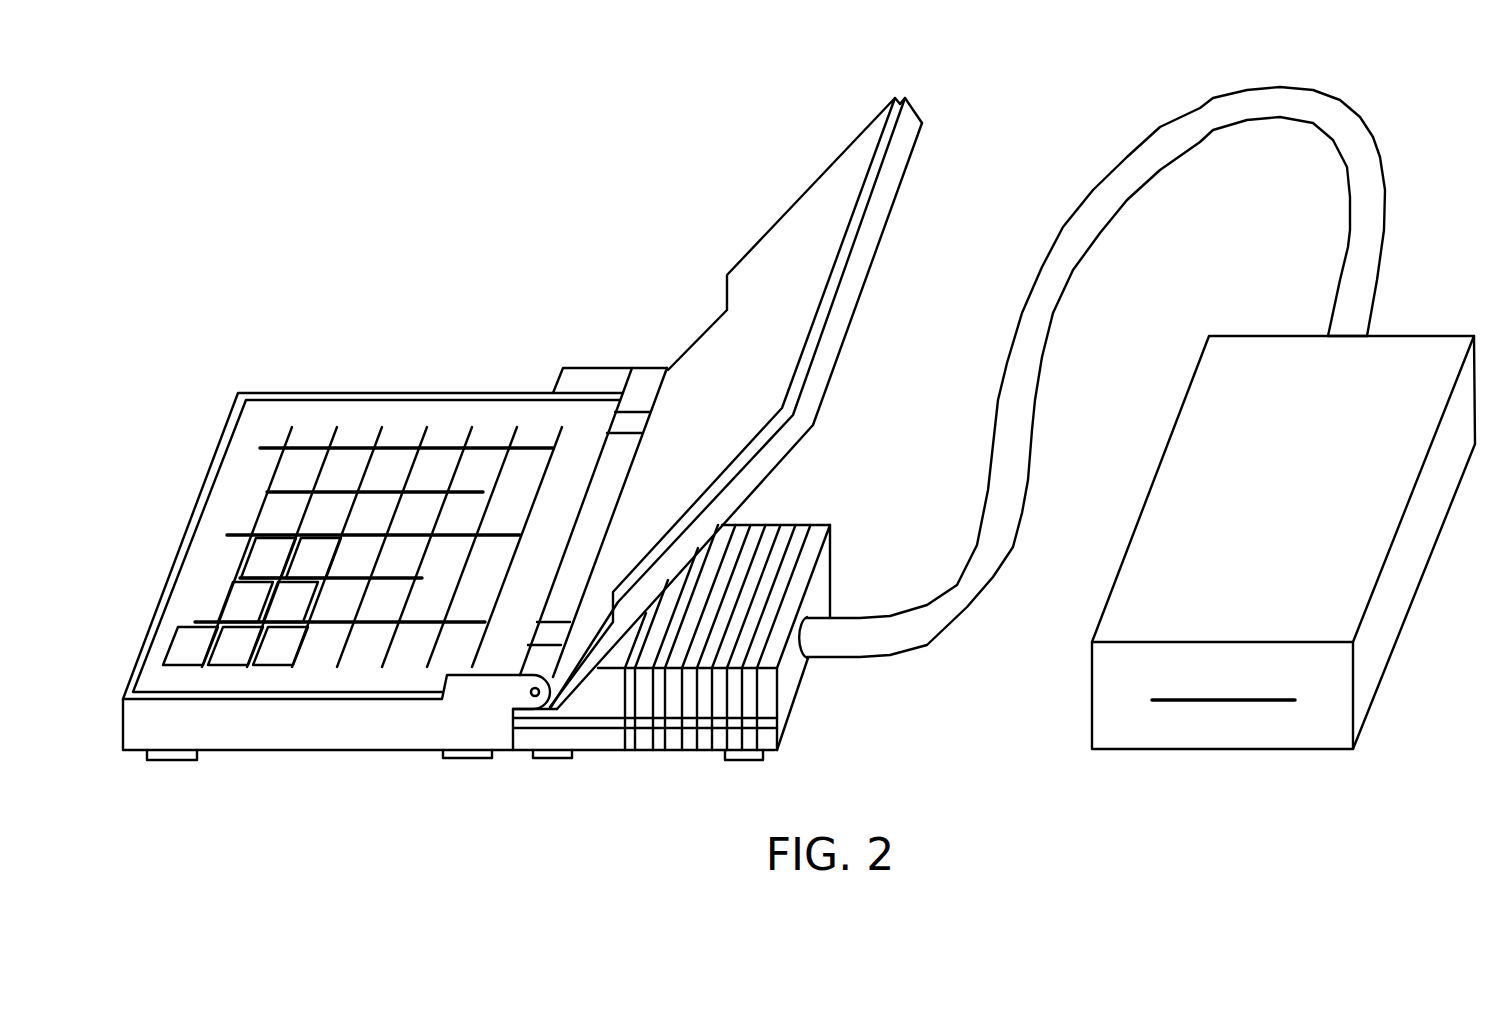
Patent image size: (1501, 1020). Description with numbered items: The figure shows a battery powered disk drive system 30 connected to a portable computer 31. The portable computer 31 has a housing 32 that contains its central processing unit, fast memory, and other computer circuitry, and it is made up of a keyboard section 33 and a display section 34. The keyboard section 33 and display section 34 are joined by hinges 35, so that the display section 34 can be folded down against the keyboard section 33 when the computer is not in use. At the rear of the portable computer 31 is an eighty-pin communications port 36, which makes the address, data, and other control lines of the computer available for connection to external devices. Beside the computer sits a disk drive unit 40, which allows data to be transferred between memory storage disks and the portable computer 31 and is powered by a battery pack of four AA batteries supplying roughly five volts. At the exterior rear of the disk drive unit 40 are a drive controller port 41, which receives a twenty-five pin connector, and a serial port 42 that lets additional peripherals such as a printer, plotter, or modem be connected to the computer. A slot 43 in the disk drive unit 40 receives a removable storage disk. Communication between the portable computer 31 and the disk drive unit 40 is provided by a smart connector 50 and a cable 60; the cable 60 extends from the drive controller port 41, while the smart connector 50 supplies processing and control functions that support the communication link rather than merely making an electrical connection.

The battery powered disk drive system 30 is at (1152, 822).
The portable computer 31 is at (452, 367).
The housing 32 is at (165, 582).
The keyboard section 33 is at (398, 437).
The display section 34 is at (758, 345).
The hinges 35 is at (548, 634).
The eighty-pin communications port 36 is at (514, 747).
The disk drive unit 40 is at (1152, 446).
The drive controller port 41 is at (1367, 333).
The serial RS-232 port 42 is at (1260, 334).
The slot 43 is at (1223, 700).
The smart connector 50 is at (676, 772).
The cable 60 is at (1028, 433).